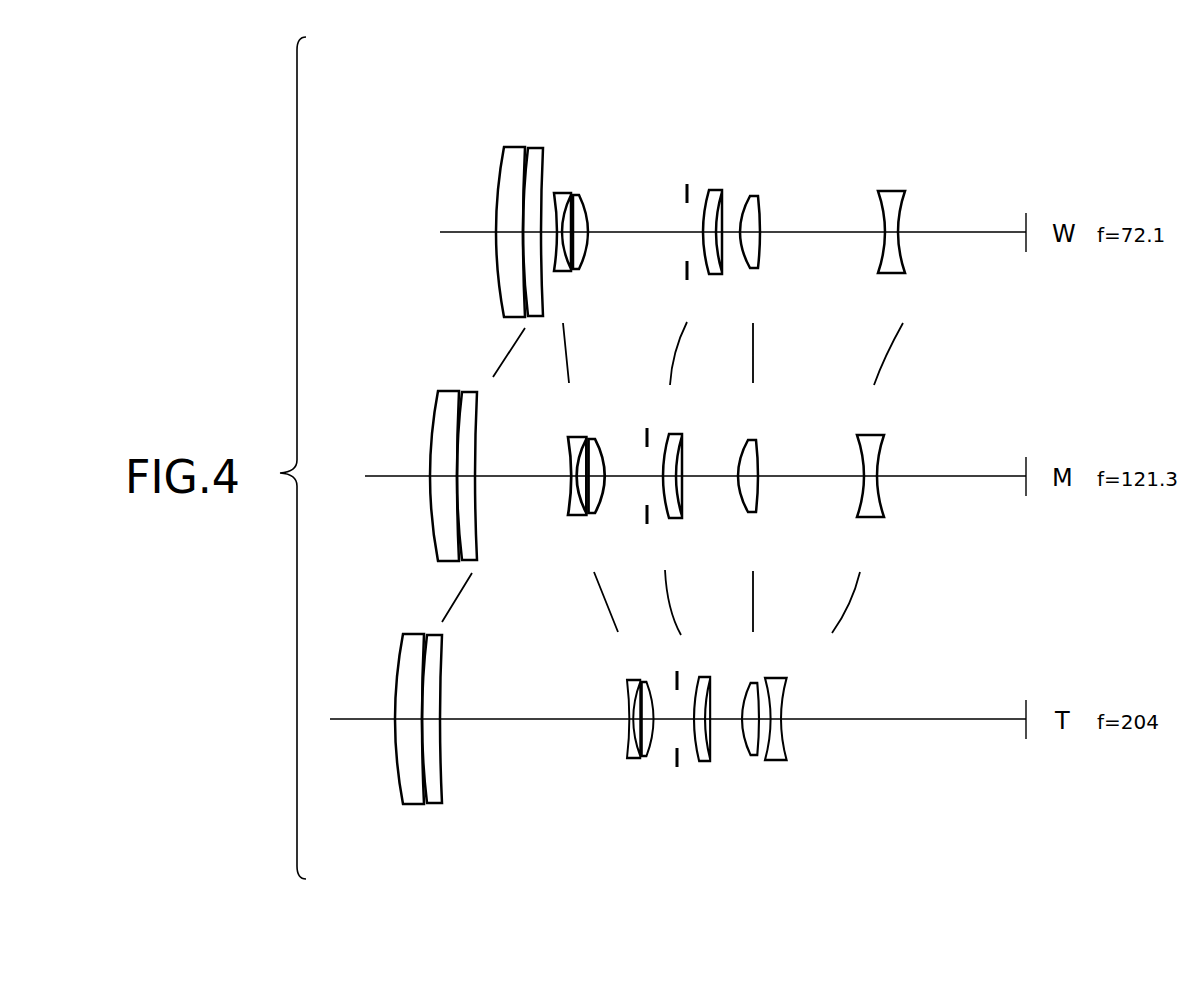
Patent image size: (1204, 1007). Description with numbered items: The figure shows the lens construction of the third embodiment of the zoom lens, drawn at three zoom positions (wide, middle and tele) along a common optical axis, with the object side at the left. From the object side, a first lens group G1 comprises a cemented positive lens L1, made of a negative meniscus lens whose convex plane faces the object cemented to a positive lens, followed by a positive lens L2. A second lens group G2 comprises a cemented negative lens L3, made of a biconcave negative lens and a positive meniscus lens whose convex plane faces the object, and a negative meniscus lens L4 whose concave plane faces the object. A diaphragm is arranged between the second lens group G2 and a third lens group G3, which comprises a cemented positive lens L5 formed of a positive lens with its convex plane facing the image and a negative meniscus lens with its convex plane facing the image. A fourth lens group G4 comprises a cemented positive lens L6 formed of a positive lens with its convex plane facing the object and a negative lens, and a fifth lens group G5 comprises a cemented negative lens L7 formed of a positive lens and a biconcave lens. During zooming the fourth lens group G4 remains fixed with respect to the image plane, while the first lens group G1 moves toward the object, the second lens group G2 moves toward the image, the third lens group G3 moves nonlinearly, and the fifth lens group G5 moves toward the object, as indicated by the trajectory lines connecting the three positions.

The first lens group G1 is at (572, 94).
The second lens group G2 is at (640, 146).
The third lens group G3 is at (668, 148).
The fourth lens group G4 is at (727, 148).
The fifth lens group G5 is at (920, 148).
The cemented positive lens L1 is at (528, 140).
The positive lens L2 is at (537, 146).
The cemented negative lens L3 is at (595, 186).
The negative meniscus lens L4 is at (584, 196).
The cemented positive lens L5 is at (718, 186).
The cemented positive lens L6 is at (770, 186).
The cemented negative lens L7 is at (915, 186).